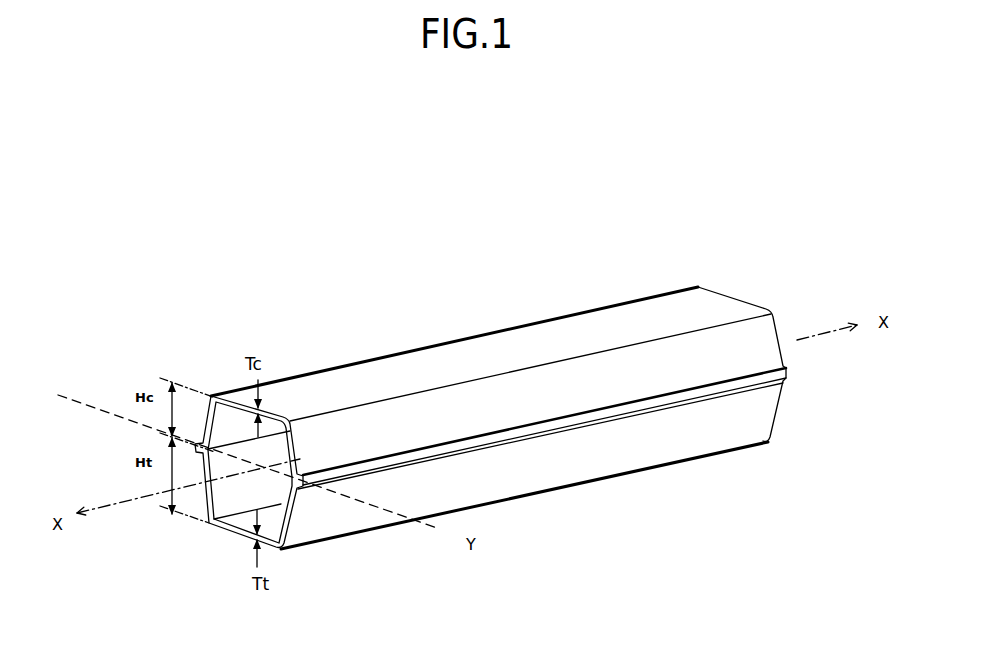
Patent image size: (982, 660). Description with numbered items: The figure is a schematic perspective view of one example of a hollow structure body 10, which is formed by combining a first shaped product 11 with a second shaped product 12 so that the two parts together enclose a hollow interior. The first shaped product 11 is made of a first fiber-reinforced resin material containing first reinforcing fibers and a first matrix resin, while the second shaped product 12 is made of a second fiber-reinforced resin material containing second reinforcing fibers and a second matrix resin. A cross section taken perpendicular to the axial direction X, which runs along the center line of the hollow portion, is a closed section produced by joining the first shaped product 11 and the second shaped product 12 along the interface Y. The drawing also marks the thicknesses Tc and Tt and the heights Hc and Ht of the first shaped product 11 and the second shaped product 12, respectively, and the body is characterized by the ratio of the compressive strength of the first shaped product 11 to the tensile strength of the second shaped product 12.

The hollow structure body 10 is at (490, 391).
The first shaped product 11 is at (547, 330).
The second shaped product 12 is at (593, 453).